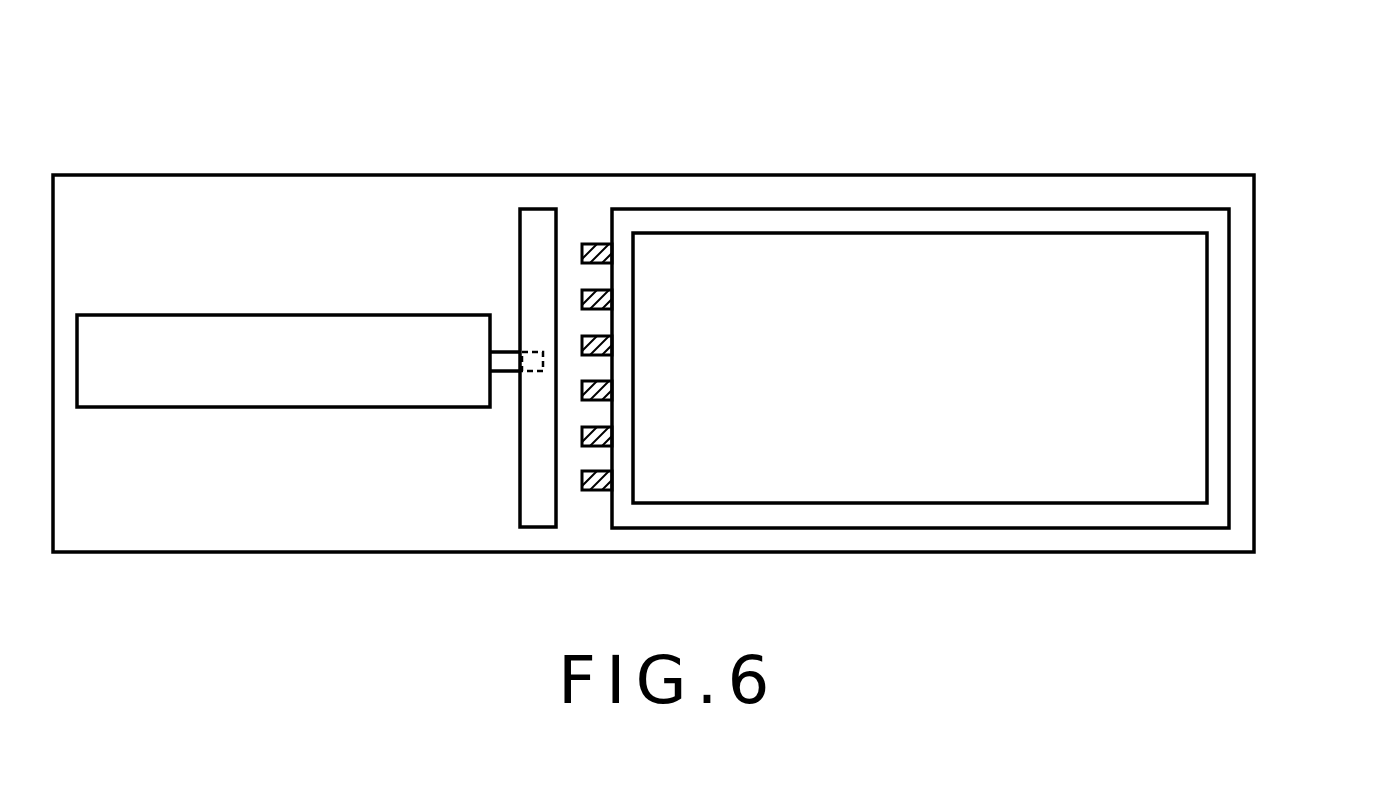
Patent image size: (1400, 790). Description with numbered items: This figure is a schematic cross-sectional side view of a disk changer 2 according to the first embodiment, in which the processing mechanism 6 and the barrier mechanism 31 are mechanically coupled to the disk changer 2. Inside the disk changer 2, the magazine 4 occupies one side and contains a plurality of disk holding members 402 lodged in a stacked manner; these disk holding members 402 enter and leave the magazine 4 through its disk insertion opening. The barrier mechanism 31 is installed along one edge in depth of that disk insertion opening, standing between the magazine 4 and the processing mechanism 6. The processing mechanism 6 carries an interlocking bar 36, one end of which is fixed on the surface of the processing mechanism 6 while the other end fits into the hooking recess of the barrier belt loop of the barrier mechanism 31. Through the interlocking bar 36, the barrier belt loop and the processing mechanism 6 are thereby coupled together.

The disk changer 2 is at (1305, 138).
The magazine 4 is at (845, 284).
The processing mechanism 6 is at (175, 352).
The barrier mechanism 31 is at (542, 207).
The interlocking bar 36 is at (510, 364).
The disk holding members 402 is at (611, 296).